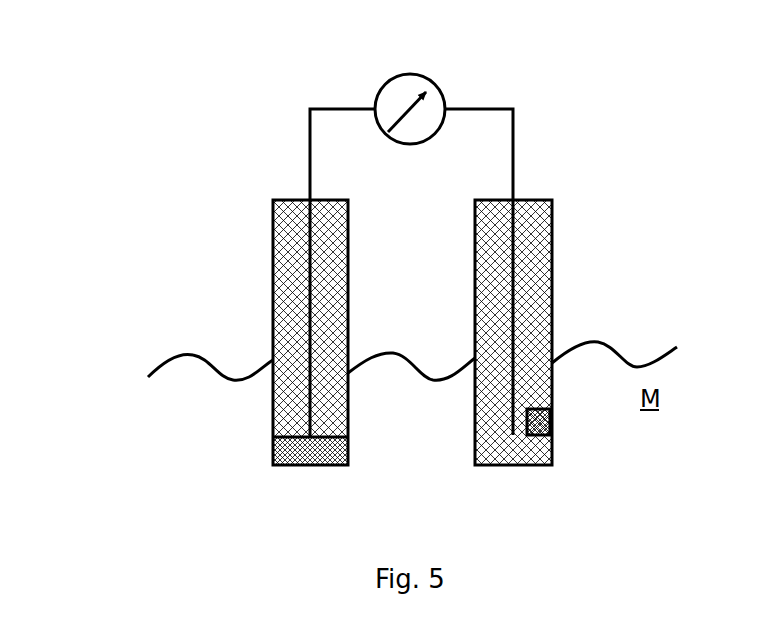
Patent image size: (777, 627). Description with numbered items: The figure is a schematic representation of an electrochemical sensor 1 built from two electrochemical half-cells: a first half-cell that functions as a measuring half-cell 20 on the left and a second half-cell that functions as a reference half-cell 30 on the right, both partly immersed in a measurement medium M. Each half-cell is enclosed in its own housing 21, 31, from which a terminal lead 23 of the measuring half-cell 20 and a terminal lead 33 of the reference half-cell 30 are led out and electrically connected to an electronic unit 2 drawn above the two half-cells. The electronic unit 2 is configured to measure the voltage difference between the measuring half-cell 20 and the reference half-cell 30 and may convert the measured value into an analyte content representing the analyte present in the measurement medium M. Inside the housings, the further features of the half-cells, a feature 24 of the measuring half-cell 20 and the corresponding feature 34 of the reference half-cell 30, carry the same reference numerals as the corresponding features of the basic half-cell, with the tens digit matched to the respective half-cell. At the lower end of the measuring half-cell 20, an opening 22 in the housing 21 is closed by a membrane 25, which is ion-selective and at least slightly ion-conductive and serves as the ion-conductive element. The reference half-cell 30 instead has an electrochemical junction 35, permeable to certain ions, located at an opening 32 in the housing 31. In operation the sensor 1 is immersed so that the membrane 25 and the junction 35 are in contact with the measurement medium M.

The electrochemical sensor 1 is at (90, 110).
The electronic unit 2 is at (368, 85).
The measuring half-cell 20 is at (238, 328).
The housing 21 is at (273, 228).
The opening 22 is at (291, 436).
The terminal lead 23 is at (310, 163).
The first electrode material 24 is at (292, 305).
The membrane 25 is at (268, 452).
The reference half-cell 30 is at (565, 318).
The housing 31 is at (552, 222).
The opening 32 is at (552, 408).
The terminal lead 33 is at (513, 178).
The second electrode material 34 is at (540, 300).
The electrochemical junction 35 is at (560, 425).